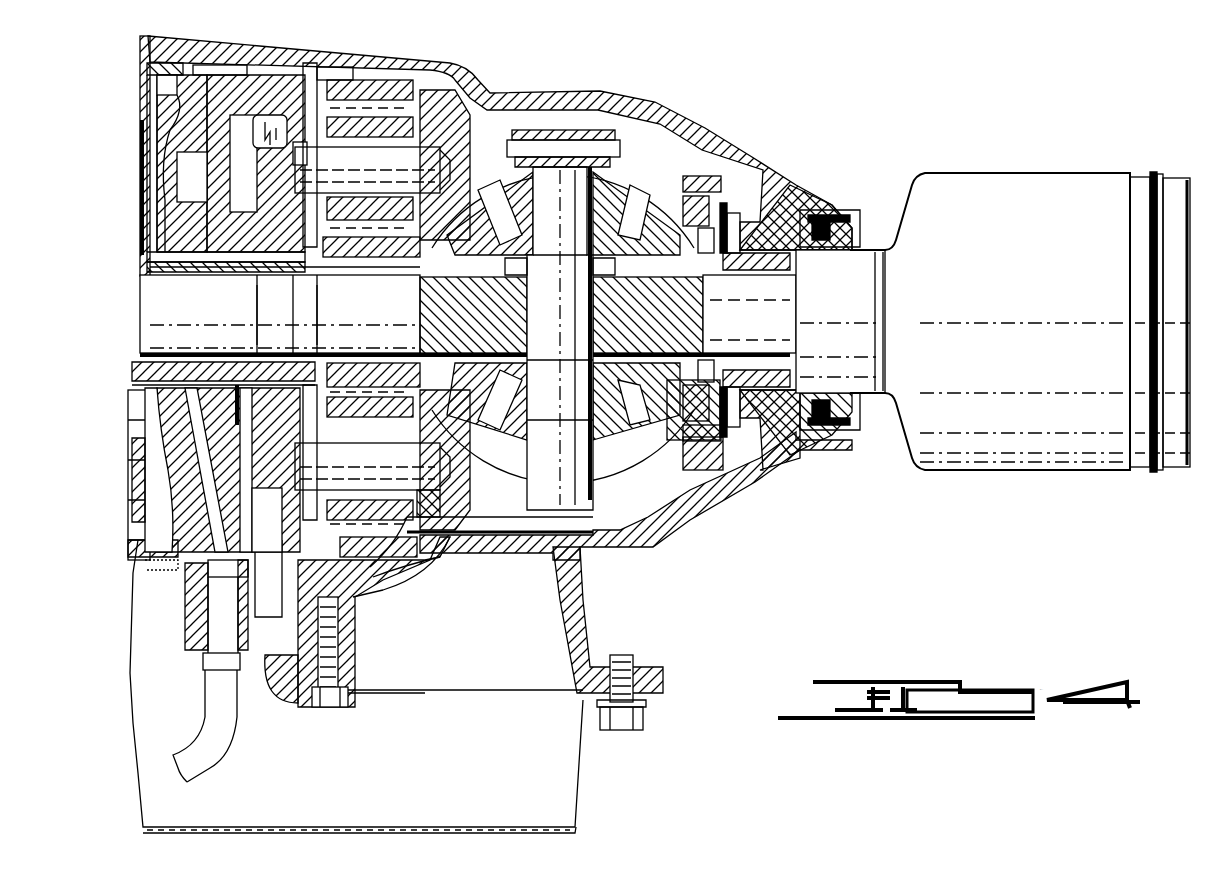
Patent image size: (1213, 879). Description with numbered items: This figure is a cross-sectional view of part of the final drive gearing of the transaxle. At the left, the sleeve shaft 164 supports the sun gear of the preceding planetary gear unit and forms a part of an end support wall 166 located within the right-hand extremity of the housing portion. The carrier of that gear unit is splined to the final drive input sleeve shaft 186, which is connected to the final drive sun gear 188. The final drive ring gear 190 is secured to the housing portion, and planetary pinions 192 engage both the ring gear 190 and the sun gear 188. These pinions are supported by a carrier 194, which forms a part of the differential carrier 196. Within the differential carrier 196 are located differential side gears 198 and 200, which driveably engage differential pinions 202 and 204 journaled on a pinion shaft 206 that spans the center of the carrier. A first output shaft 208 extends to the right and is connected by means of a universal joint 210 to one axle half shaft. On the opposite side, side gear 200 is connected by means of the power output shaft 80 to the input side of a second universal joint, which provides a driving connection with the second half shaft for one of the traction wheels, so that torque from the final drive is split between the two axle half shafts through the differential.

The power output shaft 80 is at (465, 311).
The sleeve shaft 164 is at (150, 248).
The end support wall 166 is at (150, 165).
The final drive input sleeve shaft 186 is at (214, 288).
The final drive sun gear 188 is at (350, 288).
The final drive ring gear 190 is at (390, 103).
The planetary pinions 192 is at (433, 90).
The carrier 194 is at (447, 270).
The differential carrier 196 is at (650, 160).
The differential side gear 198 is at (633, 273).
The differential side gear 200 is at (515, 262).
The differential pinion 202 is at (582, 206).
The differential pinion 204 is at (608, 515).
The pinion shaft 206 is at (578, 327).
The first output shaft 208 is at (703, 330).
The universal joint 210 is at (1035, 197).